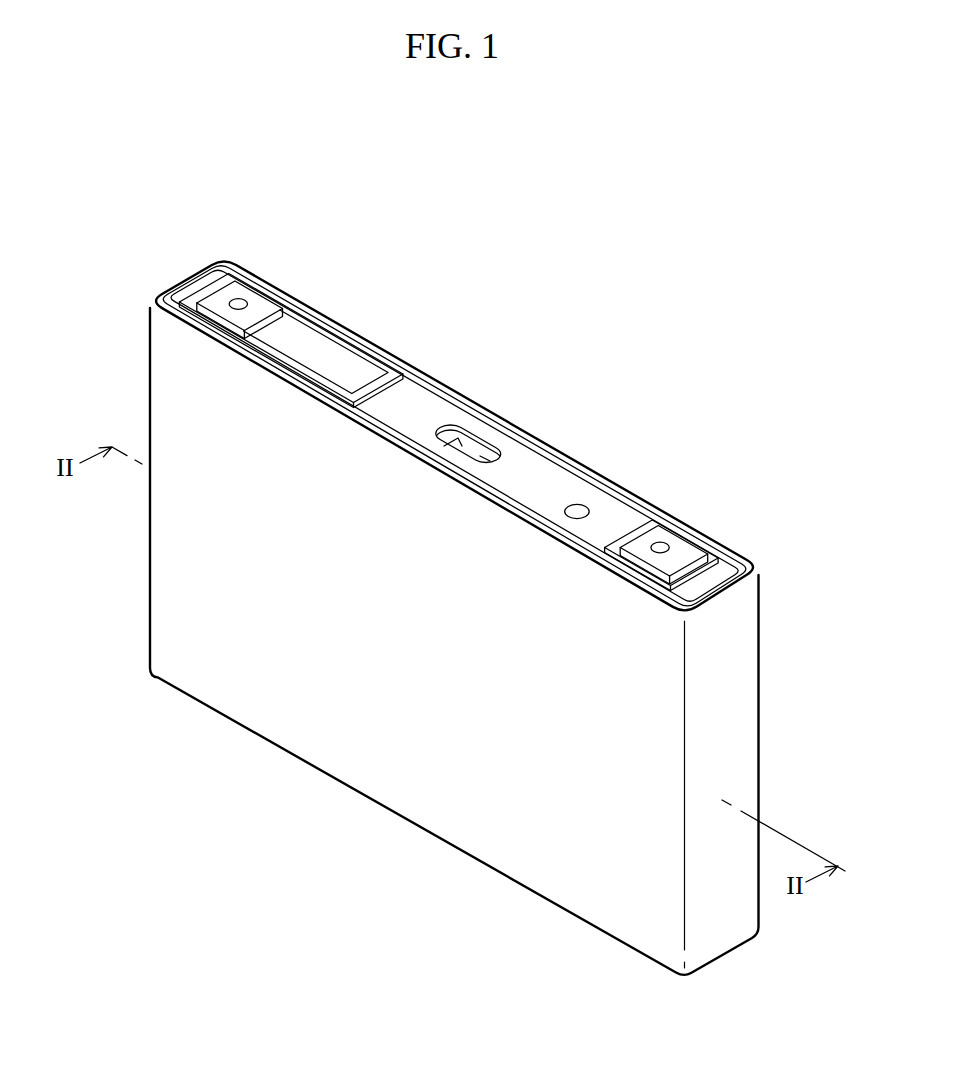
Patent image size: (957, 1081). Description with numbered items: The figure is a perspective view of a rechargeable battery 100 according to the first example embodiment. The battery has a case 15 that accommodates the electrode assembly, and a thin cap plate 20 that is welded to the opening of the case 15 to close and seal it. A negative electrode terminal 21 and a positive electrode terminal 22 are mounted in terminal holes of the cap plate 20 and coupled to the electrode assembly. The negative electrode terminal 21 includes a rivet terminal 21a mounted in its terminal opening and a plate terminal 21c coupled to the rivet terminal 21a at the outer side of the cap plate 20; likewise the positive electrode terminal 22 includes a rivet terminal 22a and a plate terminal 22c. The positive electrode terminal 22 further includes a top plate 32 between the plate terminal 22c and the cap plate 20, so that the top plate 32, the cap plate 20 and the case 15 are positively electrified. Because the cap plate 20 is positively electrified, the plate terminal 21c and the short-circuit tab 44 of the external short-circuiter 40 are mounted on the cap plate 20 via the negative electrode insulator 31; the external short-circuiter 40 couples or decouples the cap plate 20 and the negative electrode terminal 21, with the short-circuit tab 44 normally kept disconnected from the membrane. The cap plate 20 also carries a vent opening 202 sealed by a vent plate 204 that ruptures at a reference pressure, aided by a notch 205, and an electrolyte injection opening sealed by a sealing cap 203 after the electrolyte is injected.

The rechargeable battery 100 is at (587, 259).
The case 15 is at (372, 762).
The cap plate 20 is at (428, 403).
The negative electrode terminal 21 is at (245, 282).
The rivet terminal 21a is at (233, 300).
The plate terminal 21c is at (264, 302).
The positive electrode terminal 22 is at (665, 529).
The rivet terminal 22a is at (667, 547).
The plate terminal 22c is at (677, 556).
The negative electrode insulator 31 is at (305, 320).
The top plate 32 is at (680, 580).
The external short-circuiter 40 is at (348, 320).
The short-circuit tab 44 is at (349, 375).
The vent opening 202 is at (455, 428).
The sealing cap 203 is at (577, 512).
The vent plate 204 is at (474, 446).
The notch 205 is at (479, 461).